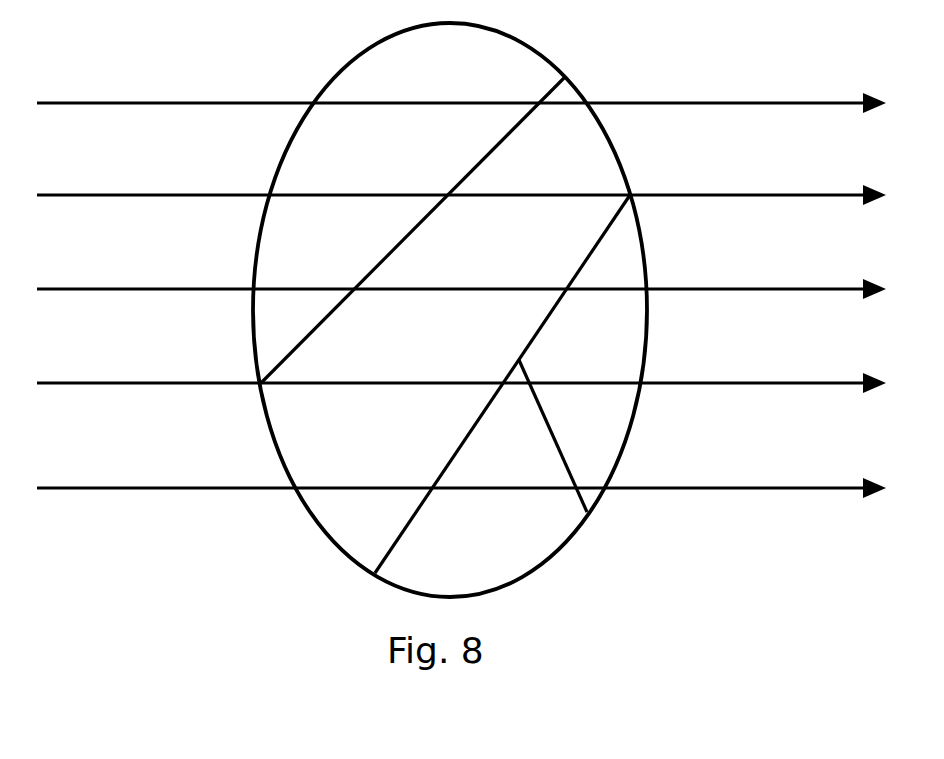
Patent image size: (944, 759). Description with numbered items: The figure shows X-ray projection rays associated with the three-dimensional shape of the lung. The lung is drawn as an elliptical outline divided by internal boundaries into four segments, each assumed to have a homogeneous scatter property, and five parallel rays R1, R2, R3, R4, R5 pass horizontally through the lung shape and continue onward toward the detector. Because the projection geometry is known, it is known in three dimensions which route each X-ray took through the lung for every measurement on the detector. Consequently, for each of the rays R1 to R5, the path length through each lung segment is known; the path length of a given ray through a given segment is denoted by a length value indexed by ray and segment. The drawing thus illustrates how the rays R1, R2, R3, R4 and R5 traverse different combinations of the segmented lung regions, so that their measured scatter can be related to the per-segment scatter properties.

The ray R1 is at (461, 86).
The ray R2 is at (461, 179).
The ray R3 is at (461, 273).
The ray R4 is at (461, 367).
The ray R5 is at (461, 472).